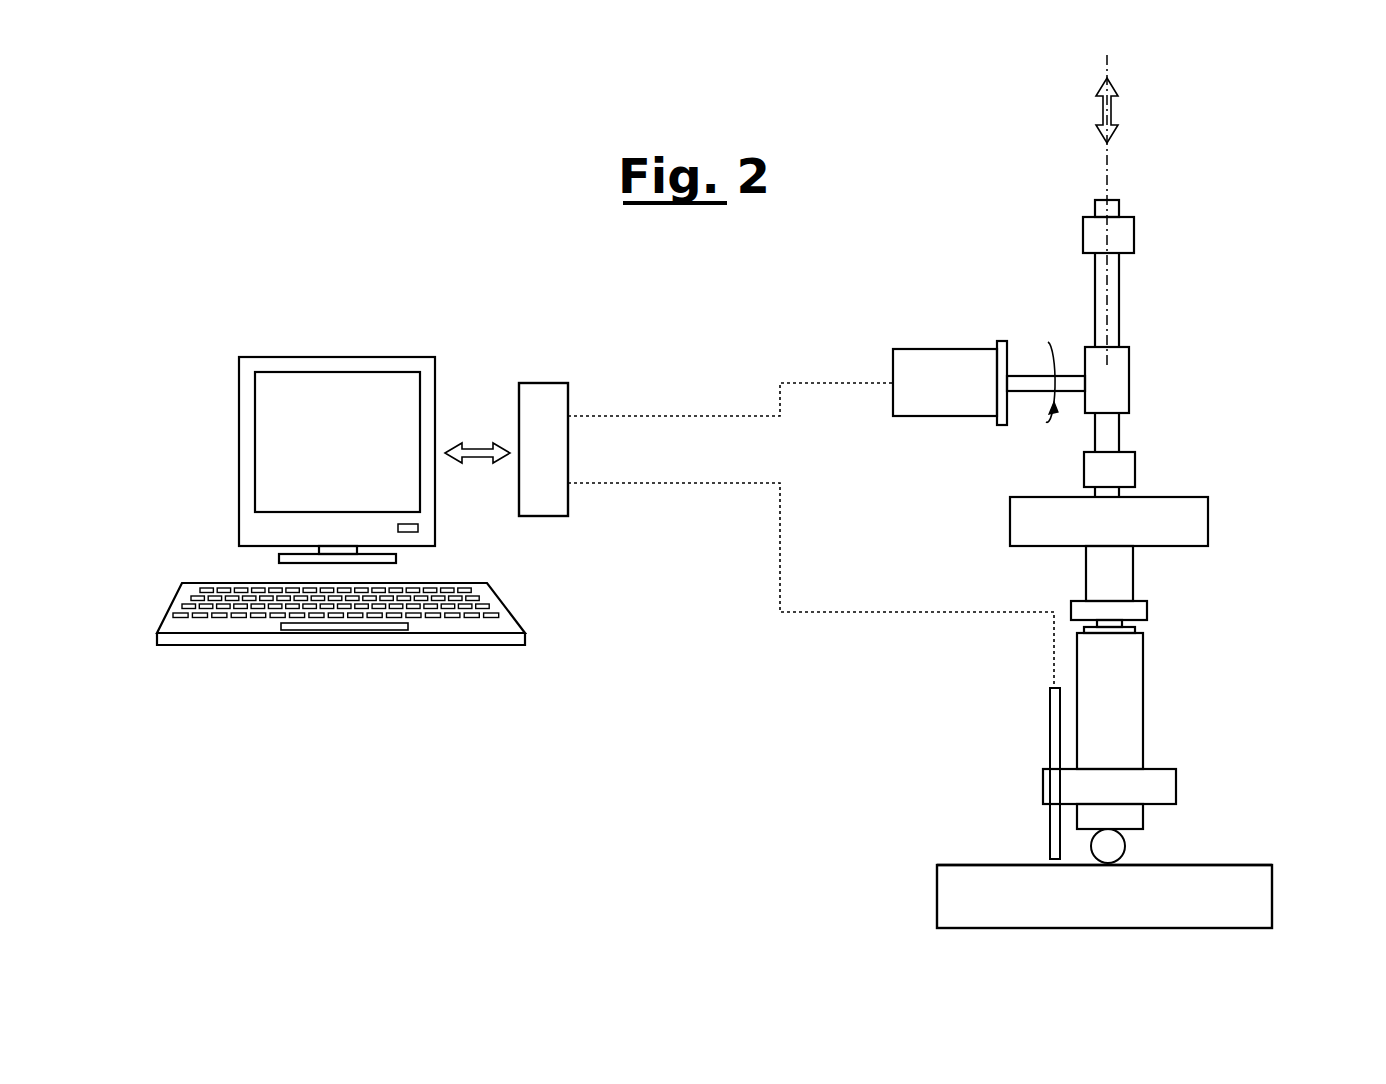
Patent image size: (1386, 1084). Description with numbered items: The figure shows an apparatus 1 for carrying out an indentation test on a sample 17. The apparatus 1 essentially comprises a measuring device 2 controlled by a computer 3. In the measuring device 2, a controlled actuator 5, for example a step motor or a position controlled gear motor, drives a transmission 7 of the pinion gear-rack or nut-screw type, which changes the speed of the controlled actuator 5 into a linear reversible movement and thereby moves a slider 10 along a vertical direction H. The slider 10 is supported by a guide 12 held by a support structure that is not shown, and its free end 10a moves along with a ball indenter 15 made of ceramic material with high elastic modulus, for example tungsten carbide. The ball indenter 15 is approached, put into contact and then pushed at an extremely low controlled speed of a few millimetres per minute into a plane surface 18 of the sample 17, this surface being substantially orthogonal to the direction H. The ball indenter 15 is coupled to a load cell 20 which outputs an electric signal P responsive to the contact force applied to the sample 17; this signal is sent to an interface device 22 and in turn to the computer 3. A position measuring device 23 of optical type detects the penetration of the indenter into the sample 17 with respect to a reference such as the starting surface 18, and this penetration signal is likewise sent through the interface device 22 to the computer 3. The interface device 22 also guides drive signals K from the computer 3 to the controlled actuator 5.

The apparatus 1 is at (1240, 257).
The measuring device 2 is at (1058, 311).
The computer 3 is at (196, 381).
The controlled actuator 5 is at (944, 404).
The transmission 7 is at (1118, 367).
The slider 10 is at (1115, 434).
The free end 10a is at (1138, 823).
The guide 12 is at (1126, 236).
The ball indenter 15 is at (1118, 841).
The sample 17 is at (1273, 895).
The plane surface 18 is at (1238, 865).
The load cell 20 is at (1054, 788).
The interface device 22 is at (542, 392).
The position measuring device 23 is at (1054, 820).
The vertical direction H is at (1098, 95).
The drive signals K is at (760, 414).
The electric signal P is at (916, 612).